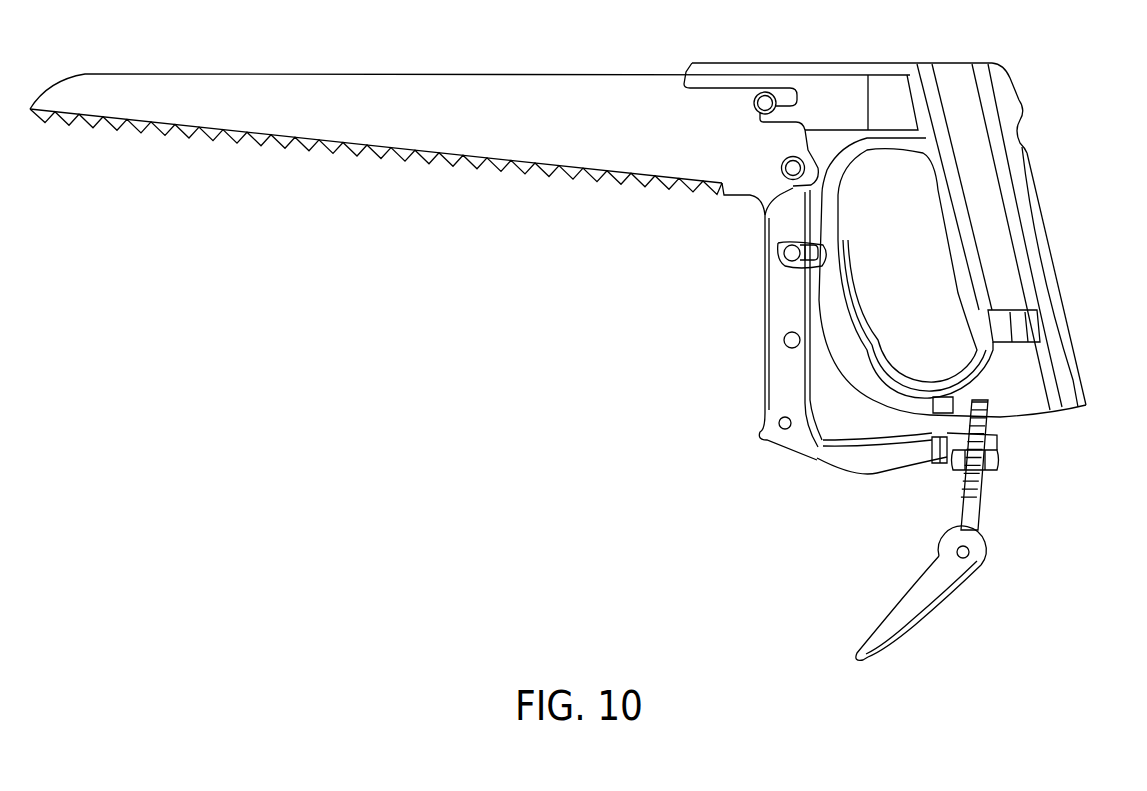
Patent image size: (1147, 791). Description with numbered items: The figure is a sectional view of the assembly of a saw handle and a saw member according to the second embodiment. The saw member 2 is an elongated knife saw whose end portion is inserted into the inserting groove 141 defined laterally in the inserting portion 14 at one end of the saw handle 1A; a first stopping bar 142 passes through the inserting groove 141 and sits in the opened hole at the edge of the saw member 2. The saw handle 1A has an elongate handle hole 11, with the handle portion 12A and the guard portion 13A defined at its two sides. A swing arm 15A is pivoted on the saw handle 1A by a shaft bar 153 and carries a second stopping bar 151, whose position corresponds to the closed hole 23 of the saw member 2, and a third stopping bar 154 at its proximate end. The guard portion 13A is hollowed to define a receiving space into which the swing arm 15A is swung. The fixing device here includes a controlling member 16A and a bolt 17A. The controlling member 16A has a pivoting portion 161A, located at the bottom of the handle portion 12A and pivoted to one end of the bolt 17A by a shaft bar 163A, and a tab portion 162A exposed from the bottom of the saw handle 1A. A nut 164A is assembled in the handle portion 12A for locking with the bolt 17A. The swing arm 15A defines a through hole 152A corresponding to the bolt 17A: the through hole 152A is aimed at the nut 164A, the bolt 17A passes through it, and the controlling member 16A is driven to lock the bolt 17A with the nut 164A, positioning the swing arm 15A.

The saw member 2 is at (490, 90).
The inserting portion 14 is at (712, 66).
The first stopping bar 142 is at (768, 96).
The inserting groove 141 is at (835, 93).
The saw handle 1A is at (1025, 86).
The handle portion 12A is at (1023, 157).
The handle hole 11 is at (940, 238).
The guard portion 13A is at (843, 276).
The swing arm 15A is at (764, 355).
The shaft bar 153 is at (782, 166).
The second stopping bar 151 is at (784, 253).
The closed hole 23 is at (812, 247).
The third stopping bar 154 is at (784, 430).
The nut 164A is at (988, 317).
The through hole 152A is at (993, 443).
The bolt 17A is at (980, 483).
The controlling member 16A is at (968, 594).
The pivoting portion 161A is at (978, 549).
The shaft bar 163A is at (957, 552).
The tab portion 162A is at (925, 613).